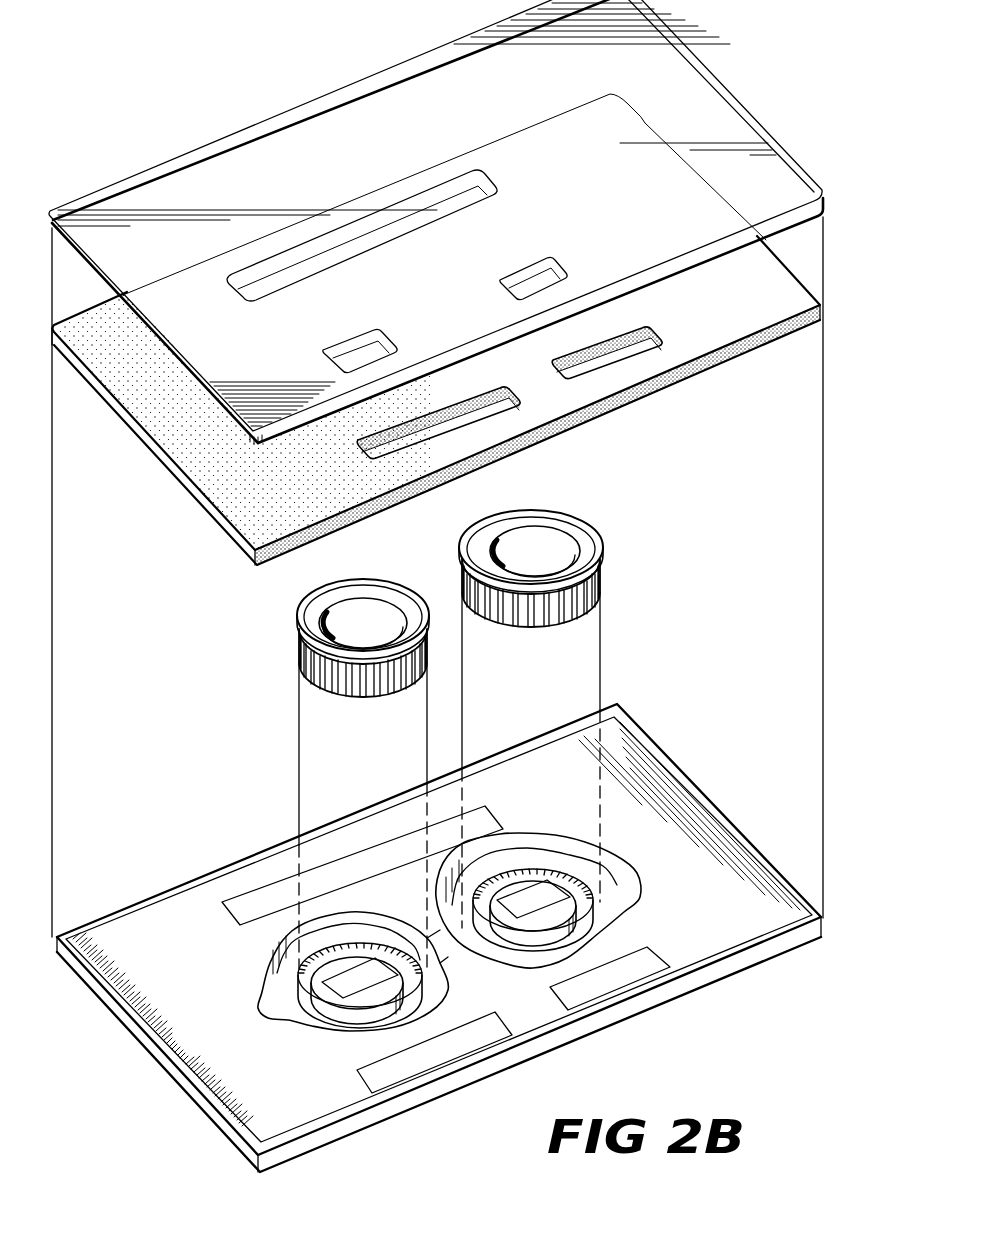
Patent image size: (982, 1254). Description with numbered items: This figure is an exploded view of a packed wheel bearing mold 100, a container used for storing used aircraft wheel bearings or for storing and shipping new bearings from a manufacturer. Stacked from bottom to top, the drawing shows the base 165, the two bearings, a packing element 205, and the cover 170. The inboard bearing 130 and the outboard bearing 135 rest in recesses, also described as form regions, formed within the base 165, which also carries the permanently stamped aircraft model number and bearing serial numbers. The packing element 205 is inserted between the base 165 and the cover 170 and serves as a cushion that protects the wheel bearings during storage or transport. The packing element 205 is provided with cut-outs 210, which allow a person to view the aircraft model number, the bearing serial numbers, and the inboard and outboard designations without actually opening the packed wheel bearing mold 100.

The wheel bearing mold 100 is at (334, 44).
The cover 170 is at (305, 107).
The cut-outs 210 is at (412, 202).
The packing element 205 is at (228, 500).
The inboard bearing 130 is at (300, 617).
The outboard bearing 135 is at (568, 526).
The base 165 is at (188, 903).